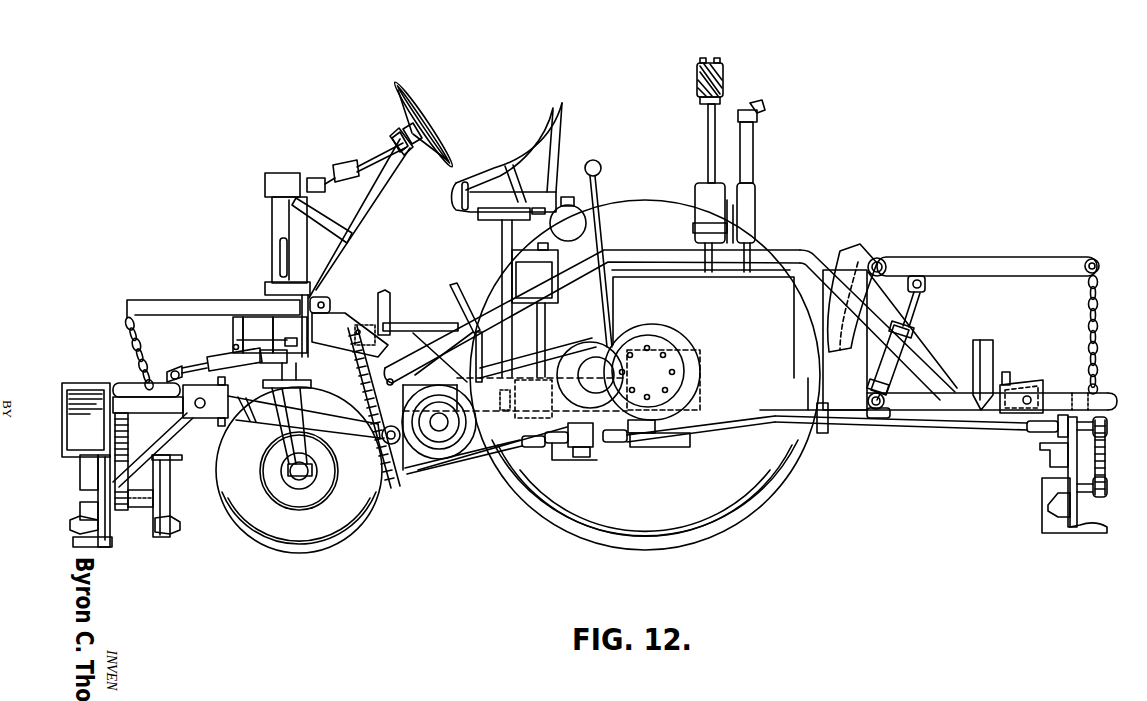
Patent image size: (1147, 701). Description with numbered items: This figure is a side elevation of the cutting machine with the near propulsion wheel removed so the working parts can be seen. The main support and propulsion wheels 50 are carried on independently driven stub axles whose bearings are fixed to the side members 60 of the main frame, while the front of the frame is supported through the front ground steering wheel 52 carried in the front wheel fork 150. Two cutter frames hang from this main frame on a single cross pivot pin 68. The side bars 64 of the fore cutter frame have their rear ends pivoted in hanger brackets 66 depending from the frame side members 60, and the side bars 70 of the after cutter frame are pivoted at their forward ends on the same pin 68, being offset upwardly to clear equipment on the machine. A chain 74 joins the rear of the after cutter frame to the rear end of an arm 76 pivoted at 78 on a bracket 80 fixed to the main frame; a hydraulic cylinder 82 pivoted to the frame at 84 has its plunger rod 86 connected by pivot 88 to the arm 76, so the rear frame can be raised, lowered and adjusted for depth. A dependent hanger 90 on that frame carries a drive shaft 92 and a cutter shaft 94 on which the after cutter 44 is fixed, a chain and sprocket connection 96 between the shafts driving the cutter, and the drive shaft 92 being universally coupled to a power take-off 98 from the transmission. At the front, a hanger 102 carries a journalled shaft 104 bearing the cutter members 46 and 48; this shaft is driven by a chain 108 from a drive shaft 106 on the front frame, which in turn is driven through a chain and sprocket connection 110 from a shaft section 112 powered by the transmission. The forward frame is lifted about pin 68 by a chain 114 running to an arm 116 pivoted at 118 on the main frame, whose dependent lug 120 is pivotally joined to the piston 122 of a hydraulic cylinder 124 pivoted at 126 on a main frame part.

The after cutter 44 is at (1045, 459).
The cutter member 46 is at (111, 548).
The cutter member 48 is at (158, 537).
The wheel 50 is at (730, 522).
The front ground steering wheel 52 is at (334, 546).
The side member 60 is at (722, 393).
The side bar 64 is at (266, 412).
The hanger bracket 66 is at (396, 360).
The cross pivot pin 68 is at (382, 445).
The side bar 70 is at (798, 250).
The chain 74 is at (1086, 333).
The arm 76 is at (975, 263).
The pivot 78 is at (881, 262).
The bracket 80 is at (812, 345).
The hydraulic cylinder 82 is at (907, 340).
The pivot 84 is at (884, 402).
The plunger rod 86 is at (912, 315).
The pivot 88 is at (926, 285).
The dependent hanger 90 is at (1090, 508).
The drive shaft 92 is at (1072, 447).
The cutter shaft 94 is at (1102, 491).
The chain and sprocket connection 96 is at (1101, 460).
The power take-off 98 is at (568, 458).
The hanger 102 is at (110, 445).
The shaft 104 is at (144, 510).
The drive shaft 106 is at (168, 372).
The chain 108 is at (156, 437).
The chain and sprocket connection 110 is at (358, 372).
The shaft section 112 is at (455, 470).
The chain 114 is at (134, 340).
The arm 116 is at (167, 306).
The pivot 118 is at (323, 303).
The dependent lug 120 is at (233, 336).
The piston 122 is at (257, 345).
The hydraulic cylinder 124 is at (292, 346).
The pivot 126 is at (373, 330).
The front wheel fork 150 is at (303, 400).